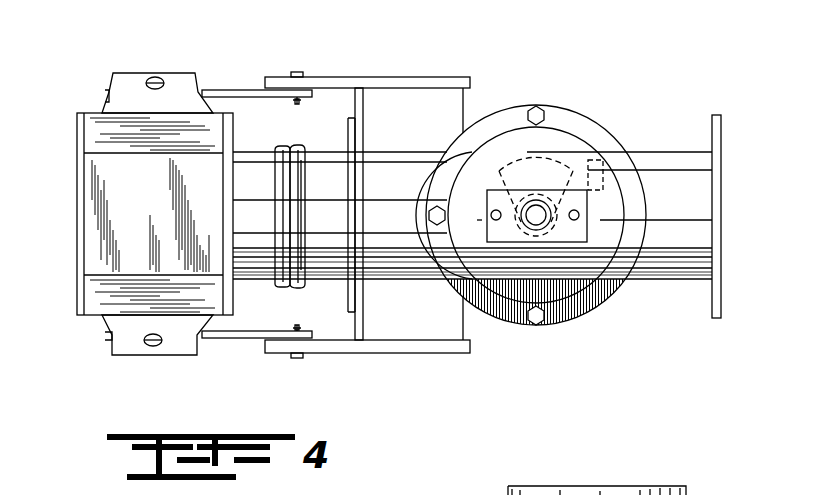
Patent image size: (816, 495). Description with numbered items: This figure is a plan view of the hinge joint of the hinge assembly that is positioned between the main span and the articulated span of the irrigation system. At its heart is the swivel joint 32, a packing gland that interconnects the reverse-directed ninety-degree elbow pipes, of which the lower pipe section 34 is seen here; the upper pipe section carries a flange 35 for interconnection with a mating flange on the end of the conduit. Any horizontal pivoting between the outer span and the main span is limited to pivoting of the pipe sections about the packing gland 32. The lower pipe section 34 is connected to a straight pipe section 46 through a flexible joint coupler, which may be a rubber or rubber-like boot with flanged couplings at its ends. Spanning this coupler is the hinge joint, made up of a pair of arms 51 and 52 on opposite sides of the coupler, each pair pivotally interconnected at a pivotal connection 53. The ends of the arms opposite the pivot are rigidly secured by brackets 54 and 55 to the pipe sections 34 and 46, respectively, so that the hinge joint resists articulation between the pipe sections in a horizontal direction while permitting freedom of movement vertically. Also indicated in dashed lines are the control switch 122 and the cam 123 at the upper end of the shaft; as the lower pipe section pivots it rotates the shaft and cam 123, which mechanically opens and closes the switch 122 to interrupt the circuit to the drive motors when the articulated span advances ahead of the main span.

The swivel joint 32 is at (557, 283).
The lower pipe section 34 is at (395, 150).
The flange 35 is at (712, 305).
The straight pipe section 46 is at (252, 150).
The arm 51 is at (225, 90).
The arm 52 is at (363, 78).
The pivotal connection 53 is at (297, 72).
The bracket 54 is at (473, 95).
The bracket 55 is at (133, 73).
The control switch 122 is at (602, 160).
The cam 123 is at (553, 162).